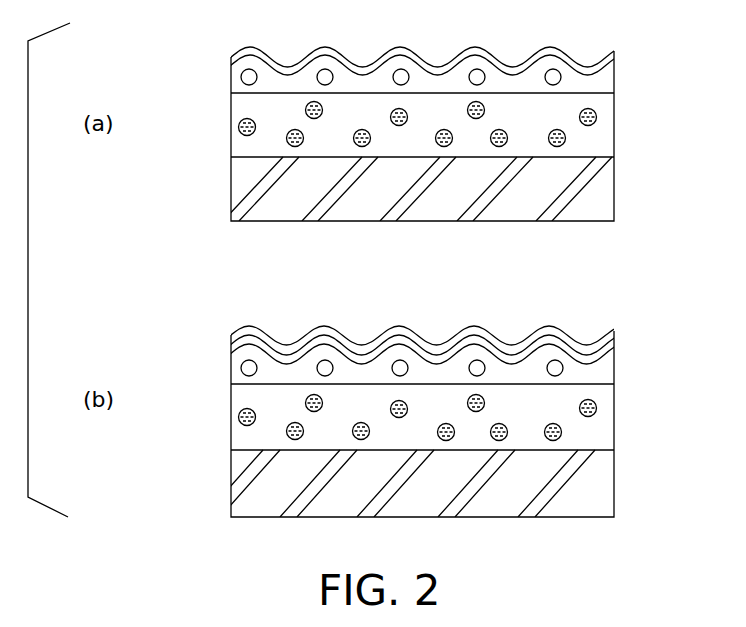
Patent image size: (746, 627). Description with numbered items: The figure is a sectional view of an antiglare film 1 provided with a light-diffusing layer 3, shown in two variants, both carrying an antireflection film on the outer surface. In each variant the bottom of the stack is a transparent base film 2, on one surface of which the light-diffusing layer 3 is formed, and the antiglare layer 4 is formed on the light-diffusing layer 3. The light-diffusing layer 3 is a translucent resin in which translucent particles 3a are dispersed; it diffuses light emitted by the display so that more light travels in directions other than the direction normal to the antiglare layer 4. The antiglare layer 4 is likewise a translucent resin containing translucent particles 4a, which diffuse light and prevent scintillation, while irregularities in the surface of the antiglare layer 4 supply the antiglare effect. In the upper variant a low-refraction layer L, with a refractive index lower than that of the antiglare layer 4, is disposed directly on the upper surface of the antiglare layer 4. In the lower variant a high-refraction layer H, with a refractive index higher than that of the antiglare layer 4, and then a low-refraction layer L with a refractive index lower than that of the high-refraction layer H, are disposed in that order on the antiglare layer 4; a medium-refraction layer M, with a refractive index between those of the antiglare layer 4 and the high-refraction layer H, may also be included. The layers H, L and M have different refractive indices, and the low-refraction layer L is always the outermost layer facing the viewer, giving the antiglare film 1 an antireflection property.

The antiglare film 1 is at (207, 109).
The transparent base film 2 is at (595, 188).
The light-diffusing layer 3 is at (595, 140).
The translucent particles 3a is at (607, 113).
The antiglare layer 4 is at (593, 83).
The translucent particles 4a is at (483, 70).
The low-refraction layer L is at (596, 67).
The high-refraction layer H is at (594, 357).
The medium-refraction layer M is at (617, 360).